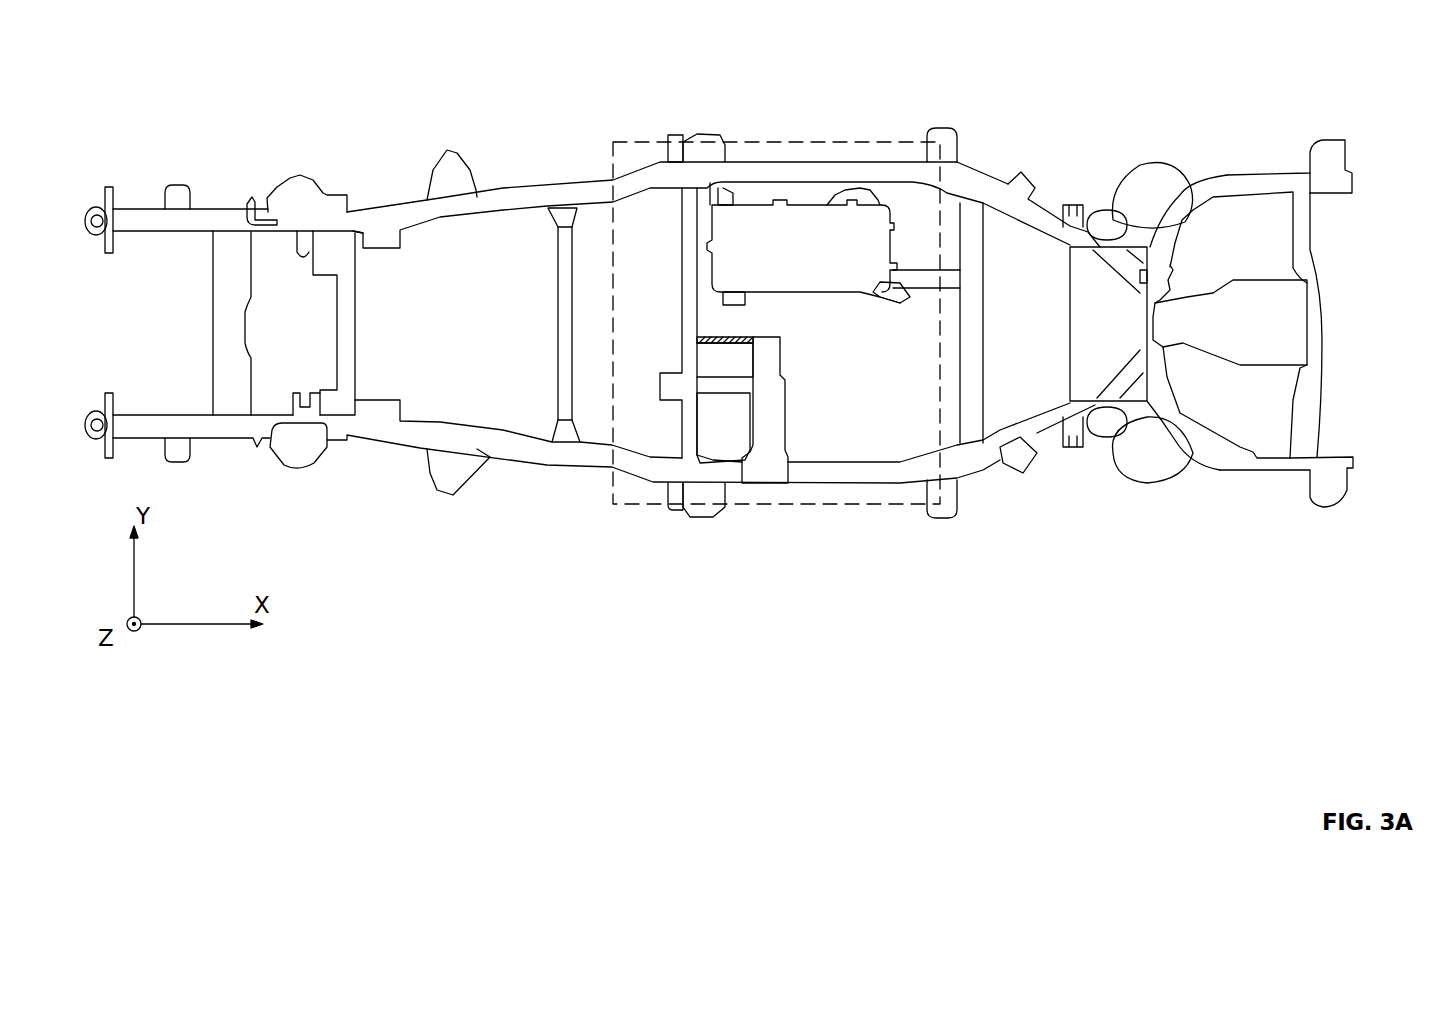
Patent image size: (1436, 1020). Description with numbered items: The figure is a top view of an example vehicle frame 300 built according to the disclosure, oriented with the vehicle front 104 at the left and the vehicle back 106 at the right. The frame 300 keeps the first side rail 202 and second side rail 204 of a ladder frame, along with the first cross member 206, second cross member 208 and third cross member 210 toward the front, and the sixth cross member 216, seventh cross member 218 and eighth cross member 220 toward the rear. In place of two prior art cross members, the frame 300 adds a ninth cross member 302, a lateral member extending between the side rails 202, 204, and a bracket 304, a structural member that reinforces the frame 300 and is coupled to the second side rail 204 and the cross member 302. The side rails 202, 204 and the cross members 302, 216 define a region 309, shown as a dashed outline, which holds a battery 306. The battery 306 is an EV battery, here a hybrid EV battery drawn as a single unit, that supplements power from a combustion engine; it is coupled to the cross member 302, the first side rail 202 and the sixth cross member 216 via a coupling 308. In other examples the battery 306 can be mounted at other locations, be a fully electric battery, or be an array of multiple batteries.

The vehicle frame 300 is at (1212, 52).
The vehicle front 104 is at (150, 180).
The vehicle back 106 is at (1342, 105).
The first side rail 202 is at (507, 183).
The second side rail 204 is at (498, 466).
The first cross member 206 is at (210, 308).
The second cross member 208 is at (357, 308).
The third cross member 210 is at (557, 357).
The sixth cross member 216 is at (981, 345).
The seventh cross member 218 is at (1173, 262).
The eighth cross member 220 is at (1313, 247).
The ninth cross member 302 is at (681, 253).
The bracket 304 is at (781, 430).
The battery 306 is at (778, 202).
The coupling 308 is at (937, 291).
The region 309 is at (757, 506).